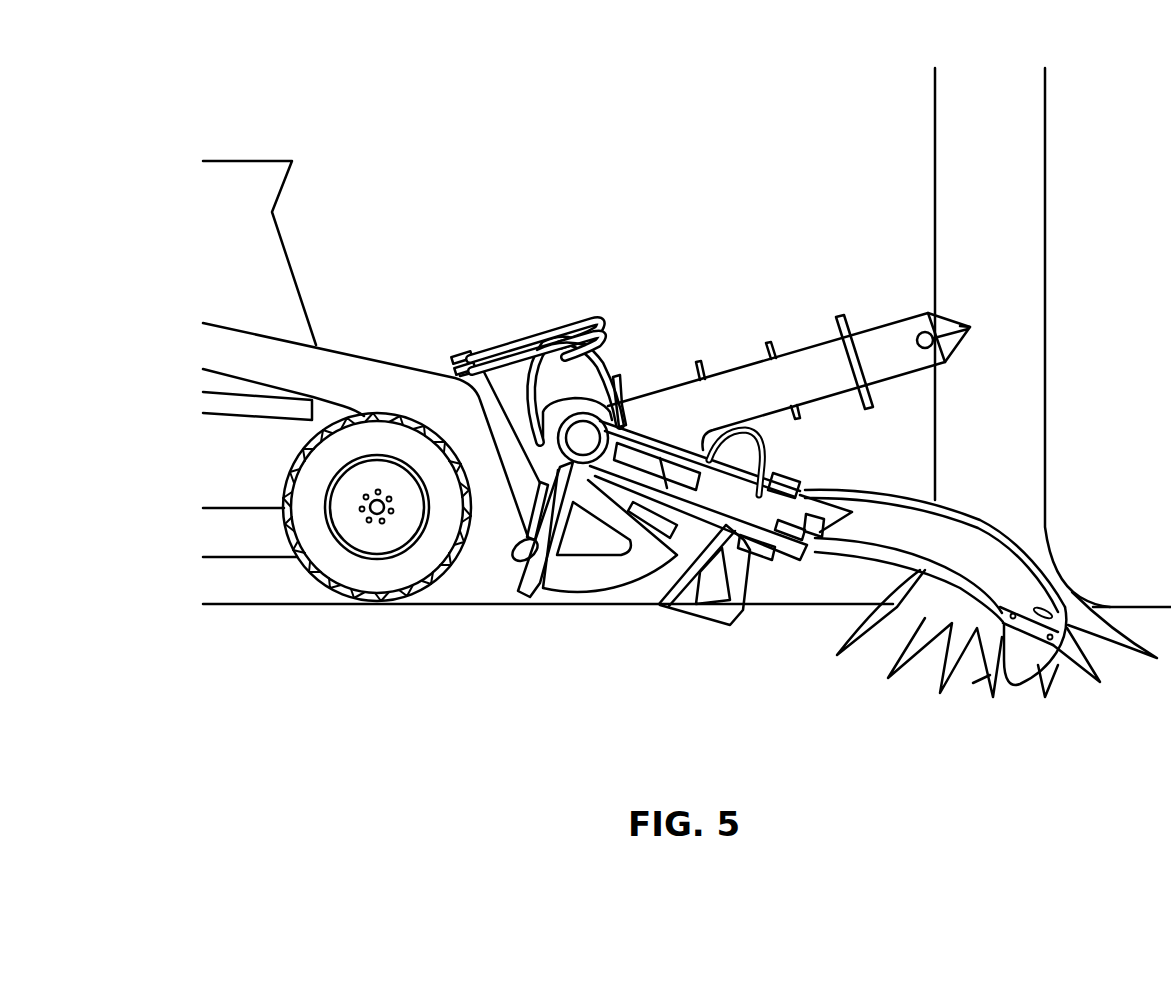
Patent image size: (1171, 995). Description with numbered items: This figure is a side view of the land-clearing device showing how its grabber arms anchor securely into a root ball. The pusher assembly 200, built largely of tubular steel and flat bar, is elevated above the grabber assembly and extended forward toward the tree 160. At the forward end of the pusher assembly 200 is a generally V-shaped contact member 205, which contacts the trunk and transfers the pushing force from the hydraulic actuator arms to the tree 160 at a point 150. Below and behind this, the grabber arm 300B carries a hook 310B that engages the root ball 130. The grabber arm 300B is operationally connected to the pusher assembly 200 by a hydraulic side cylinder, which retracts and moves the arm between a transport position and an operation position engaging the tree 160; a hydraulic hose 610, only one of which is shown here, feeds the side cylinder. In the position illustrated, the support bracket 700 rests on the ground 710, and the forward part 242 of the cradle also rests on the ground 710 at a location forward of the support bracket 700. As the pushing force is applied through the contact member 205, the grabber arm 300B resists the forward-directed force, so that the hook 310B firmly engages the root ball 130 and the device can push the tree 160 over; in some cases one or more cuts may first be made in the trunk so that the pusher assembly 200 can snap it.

The tree 160 is at (1023, 145).
The contact member 205 is at (945, 322).
The point 150 is at (962, 328).
The pusher assembly 200 is at (795, 348).
The hydraulic hose 610 is at (768, 458).
The grabber arm 300B is at (894, 497).
The hook 310B is at (1033, 660).
The root ball 130 is at (1005, 695).
The ground 710 is at (522, 608).
The support bracket 700 is at (657, 607).
The forward part of the cradle 242 is at (735, 620).